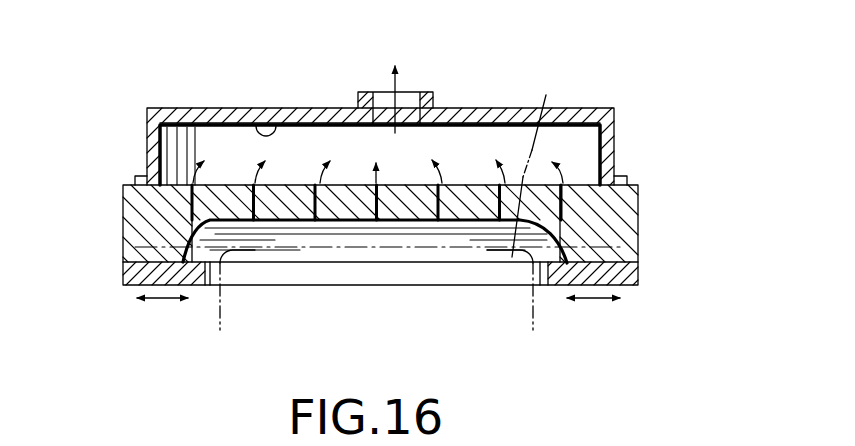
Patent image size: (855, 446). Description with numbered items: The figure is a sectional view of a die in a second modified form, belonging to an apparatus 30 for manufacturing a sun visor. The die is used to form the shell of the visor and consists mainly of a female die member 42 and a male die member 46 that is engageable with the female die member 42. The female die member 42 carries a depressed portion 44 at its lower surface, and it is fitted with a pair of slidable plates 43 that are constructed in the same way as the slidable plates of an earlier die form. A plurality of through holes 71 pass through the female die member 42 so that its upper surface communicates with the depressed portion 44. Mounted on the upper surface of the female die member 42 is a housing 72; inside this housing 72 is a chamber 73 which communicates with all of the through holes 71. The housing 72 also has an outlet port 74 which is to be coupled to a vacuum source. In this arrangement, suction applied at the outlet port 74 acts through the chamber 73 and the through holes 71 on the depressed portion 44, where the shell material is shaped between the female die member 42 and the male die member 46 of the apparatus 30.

The apparatus 30 is at (381, 205).
The female die member 42 is at (147, 222).
The slidable plates 43 is at (129, 286).
The depressed portion 44 is at (360, 220).
The male die member 46 is at (539, 160).
The through holes 71 is at (315, 220).
The housing 72 is at (214, 108).
The chamber 73 is at (276, 122).
The outlet port 74 is at (418, 106).